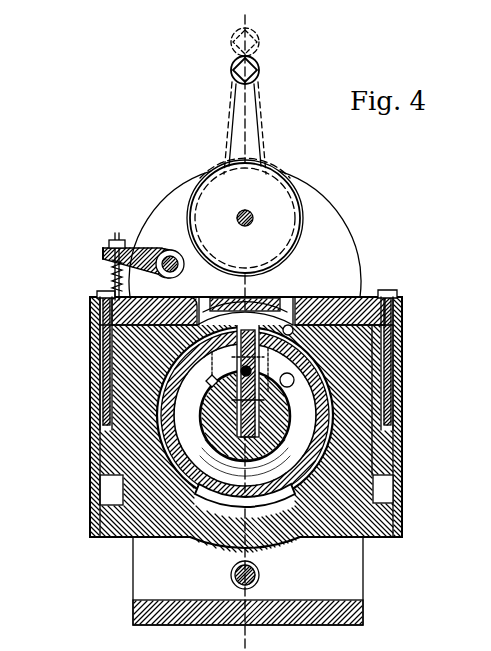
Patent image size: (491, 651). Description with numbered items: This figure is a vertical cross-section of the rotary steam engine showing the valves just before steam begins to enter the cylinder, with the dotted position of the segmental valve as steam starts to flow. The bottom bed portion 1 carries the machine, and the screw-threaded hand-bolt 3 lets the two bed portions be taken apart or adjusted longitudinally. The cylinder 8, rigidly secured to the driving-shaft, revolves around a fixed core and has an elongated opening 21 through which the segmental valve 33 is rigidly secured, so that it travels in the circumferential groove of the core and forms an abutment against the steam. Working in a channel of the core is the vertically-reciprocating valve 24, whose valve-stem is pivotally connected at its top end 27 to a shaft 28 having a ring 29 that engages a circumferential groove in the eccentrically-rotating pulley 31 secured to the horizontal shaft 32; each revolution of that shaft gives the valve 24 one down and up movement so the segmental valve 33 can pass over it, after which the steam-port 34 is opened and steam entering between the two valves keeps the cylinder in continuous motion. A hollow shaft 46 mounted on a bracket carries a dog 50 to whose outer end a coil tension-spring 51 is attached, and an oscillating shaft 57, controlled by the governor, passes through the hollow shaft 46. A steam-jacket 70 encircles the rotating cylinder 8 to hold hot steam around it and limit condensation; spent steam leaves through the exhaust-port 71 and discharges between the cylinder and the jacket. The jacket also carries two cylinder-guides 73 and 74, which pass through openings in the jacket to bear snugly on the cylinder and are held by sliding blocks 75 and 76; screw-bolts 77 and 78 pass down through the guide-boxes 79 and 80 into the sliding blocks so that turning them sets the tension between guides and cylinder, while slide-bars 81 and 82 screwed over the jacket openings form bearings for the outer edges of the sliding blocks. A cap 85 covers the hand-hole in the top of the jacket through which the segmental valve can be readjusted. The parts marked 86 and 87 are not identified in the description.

The bottom bed portion 1 is at (295, 612).
The screw-threaded hand-bolt 3 is at (260, 575).
The cylinder 8 is at (400, 431).
The elongated opening 21 is at (292, 300).
The vertically-reciprocating valve 24 is at (298, 382).
The top end of valve-stem 27 is at (258, 68).
The shaft 28 is at (258, 130).
The ring 29 is at (303, 228).
The eccentrically-rotating pulley 31 is at (240, 198).
The horizontal shaft 32 is at (240, 215).
The segmental valve 33 is at (102, 350).
The steam-port 34 is at (200, 417).
The hollow shaft 46 is at (163, 254).
The dog 50 is at (105, 247).
The coil tension-spring 51 is at (102, 250).
The oscillating shaft 57 is at (142, 254).
The steam-jacket 70 is at (232, 518).
The exhaust-port 71 is at (394, 357).
The cylinder-guide 73 is at (386, 486).
The cylinder-guide 74 is at (150, 470).
The sliding block 75 is at (168, 448).
The sliding block 76 is at (380, 452).
The screw-bolt 77 is at (113, 268).
The screw-bolt 78 is at (400, 307).
The guide-box 79 is at (92, 312).
The guide-box 80 is at (362, 297).
The slide-bar 81 is at (105, 370).
The slide-bar 82 is at (393, 352).
The cap 85 is at (303, 262).
The bottom edge left 86 is at (134, 539).
The bottom edge right 87 is at (364, 539).